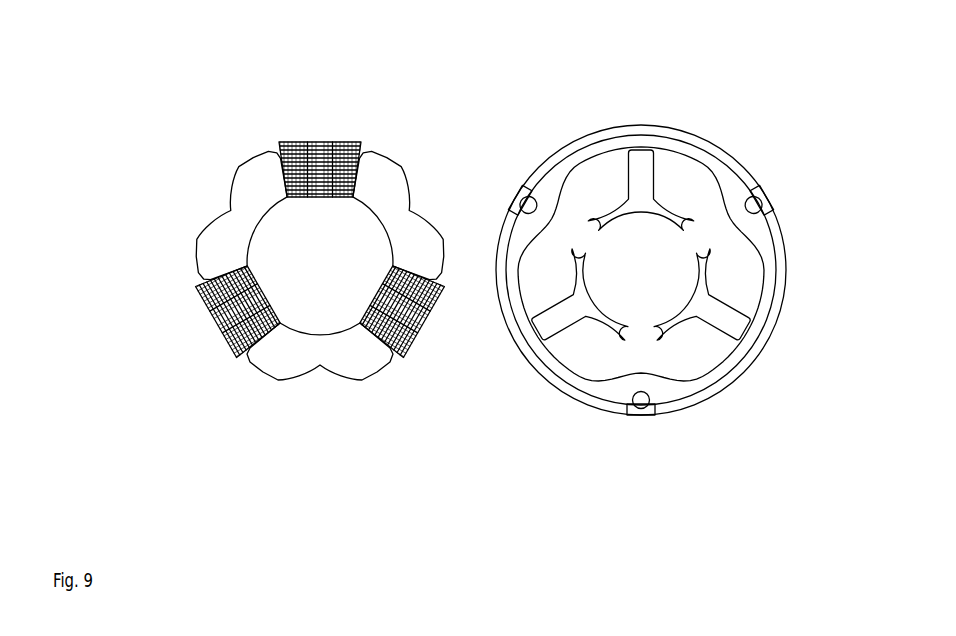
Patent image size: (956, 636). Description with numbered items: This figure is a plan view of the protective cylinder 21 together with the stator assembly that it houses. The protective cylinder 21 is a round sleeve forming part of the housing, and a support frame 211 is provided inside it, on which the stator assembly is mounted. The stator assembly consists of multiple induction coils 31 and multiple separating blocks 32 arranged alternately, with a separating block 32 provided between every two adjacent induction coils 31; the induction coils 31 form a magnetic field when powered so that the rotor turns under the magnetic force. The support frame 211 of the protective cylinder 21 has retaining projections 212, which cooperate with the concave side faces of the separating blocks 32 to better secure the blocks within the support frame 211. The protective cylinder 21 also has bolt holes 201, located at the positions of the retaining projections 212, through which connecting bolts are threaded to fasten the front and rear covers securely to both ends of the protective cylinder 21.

The protective cylinder 21 is at (640, 127).
The bolt holes 201 is at (752, 203).
The support frame 211 is at (695, 303).
The retaining projection 212 is at (732, 198).
The induction coils 31 is at (318, 147).
The separating blocks 32 is at (400, 210).